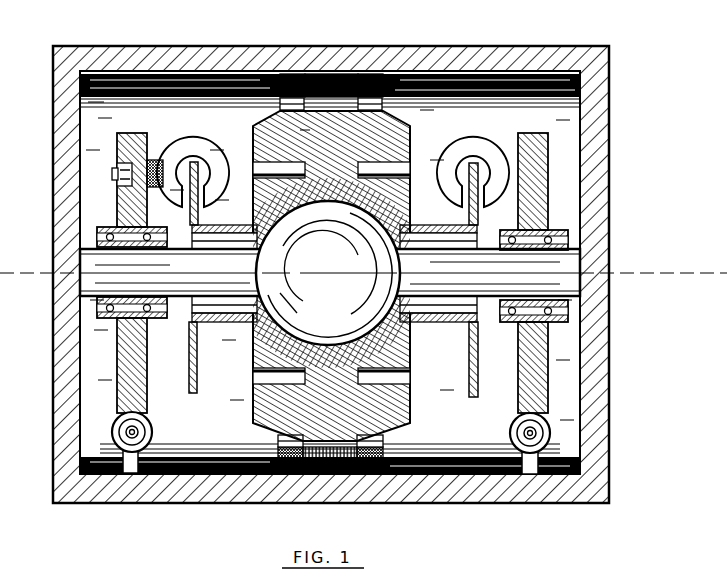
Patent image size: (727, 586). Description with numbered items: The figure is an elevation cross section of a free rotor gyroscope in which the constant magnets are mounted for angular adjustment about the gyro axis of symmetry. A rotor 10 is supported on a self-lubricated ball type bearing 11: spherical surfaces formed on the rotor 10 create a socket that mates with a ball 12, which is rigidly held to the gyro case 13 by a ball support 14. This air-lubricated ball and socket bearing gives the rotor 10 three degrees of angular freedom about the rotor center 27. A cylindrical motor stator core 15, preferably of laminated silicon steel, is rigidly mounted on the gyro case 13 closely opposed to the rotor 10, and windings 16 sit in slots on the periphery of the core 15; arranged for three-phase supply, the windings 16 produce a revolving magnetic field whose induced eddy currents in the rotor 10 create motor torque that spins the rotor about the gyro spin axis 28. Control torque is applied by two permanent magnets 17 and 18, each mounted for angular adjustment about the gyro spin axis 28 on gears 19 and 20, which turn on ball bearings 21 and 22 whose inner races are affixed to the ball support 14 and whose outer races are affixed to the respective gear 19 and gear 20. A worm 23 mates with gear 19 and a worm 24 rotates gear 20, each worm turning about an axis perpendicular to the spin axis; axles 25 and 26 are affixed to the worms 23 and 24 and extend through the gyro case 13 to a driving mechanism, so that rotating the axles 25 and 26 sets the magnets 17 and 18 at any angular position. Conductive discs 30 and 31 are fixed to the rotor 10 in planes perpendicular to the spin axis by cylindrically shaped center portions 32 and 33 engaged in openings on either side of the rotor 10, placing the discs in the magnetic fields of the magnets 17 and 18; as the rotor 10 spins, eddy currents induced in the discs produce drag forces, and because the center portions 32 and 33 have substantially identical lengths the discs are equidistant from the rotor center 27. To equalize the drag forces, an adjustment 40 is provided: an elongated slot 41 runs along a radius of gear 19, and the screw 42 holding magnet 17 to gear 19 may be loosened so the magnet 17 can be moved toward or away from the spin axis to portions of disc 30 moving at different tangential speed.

The rotor 10 is at (382, 133).
The self-lubricated ball type bearing 11 is at (373, 208).
The ball 12 is at (277, 324).
The gyro case 13 is at (557, 62).
The ball support 14 is at (557, 265).
The motor stator core 15 is at (325, 73).
The windings 16 is at (366, 73).
The permanent magnet 17 is at (188, 138).
The permanent magnet 18 is at (463, 147).
The gear 19 is at (123, 136).
The gear 20 is at (525, 207).
The ball bearing 21 is at (98, 233).
The ball bearing 22 is at (568, 237).
The worm 23 is at (117, 436).
The worm 24 is at (524, 433).
The axle 25 is at (138, 432).
The axle 26 is at (533, 436).
The rotor center 27 is at (330, 273).
The gyro spin axis 28 is at (618, 275).
The conductive disc 30 is at (191, 375).
The conductive disc 31 is at (475, 362).
The cylindrically shaped center portion 32 is at (217, 323).
The cylindrically shaped center portion 33 is at (438, 325).
The adjustment 40 is at (115, 172).
The elongated slot 41 is at (148, 162).
The screw 42 is at (122, 168).